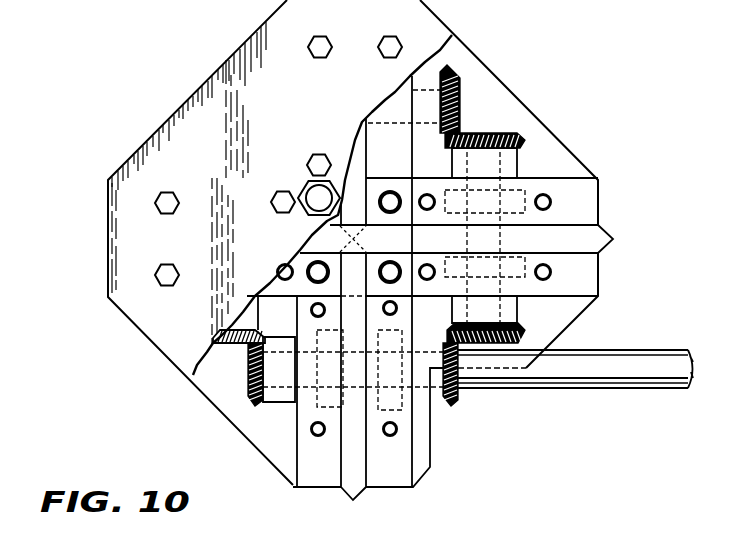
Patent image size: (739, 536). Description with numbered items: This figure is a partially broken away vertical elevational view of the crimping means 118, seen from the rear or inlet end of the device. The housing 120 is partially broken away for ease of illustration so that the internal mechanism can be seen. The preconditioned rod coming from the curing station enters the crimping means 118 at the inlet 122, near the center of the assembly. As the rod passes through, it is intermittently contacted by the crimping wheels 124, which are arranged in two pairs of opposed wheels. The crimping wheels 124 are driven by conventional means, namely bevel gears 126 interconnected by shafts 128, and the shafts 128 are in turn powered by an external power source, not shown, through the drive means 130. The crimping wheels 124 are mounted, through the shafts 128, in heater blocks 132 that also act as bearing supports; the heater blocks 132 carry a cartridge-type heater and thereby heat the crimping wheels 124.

The crimping means 118 is at (176, 99).
The housing 120 is at (267, 60).
The rod inlet 122 is at (358, 240).
The crimping wheels 124 is at (349, 192).
The bevel gears 126 is at (493, 130).
The shafts 128 is at (481, 177).
The drive means 130 is at (573, 372).
The heater blocks 132 is at (585, 198).